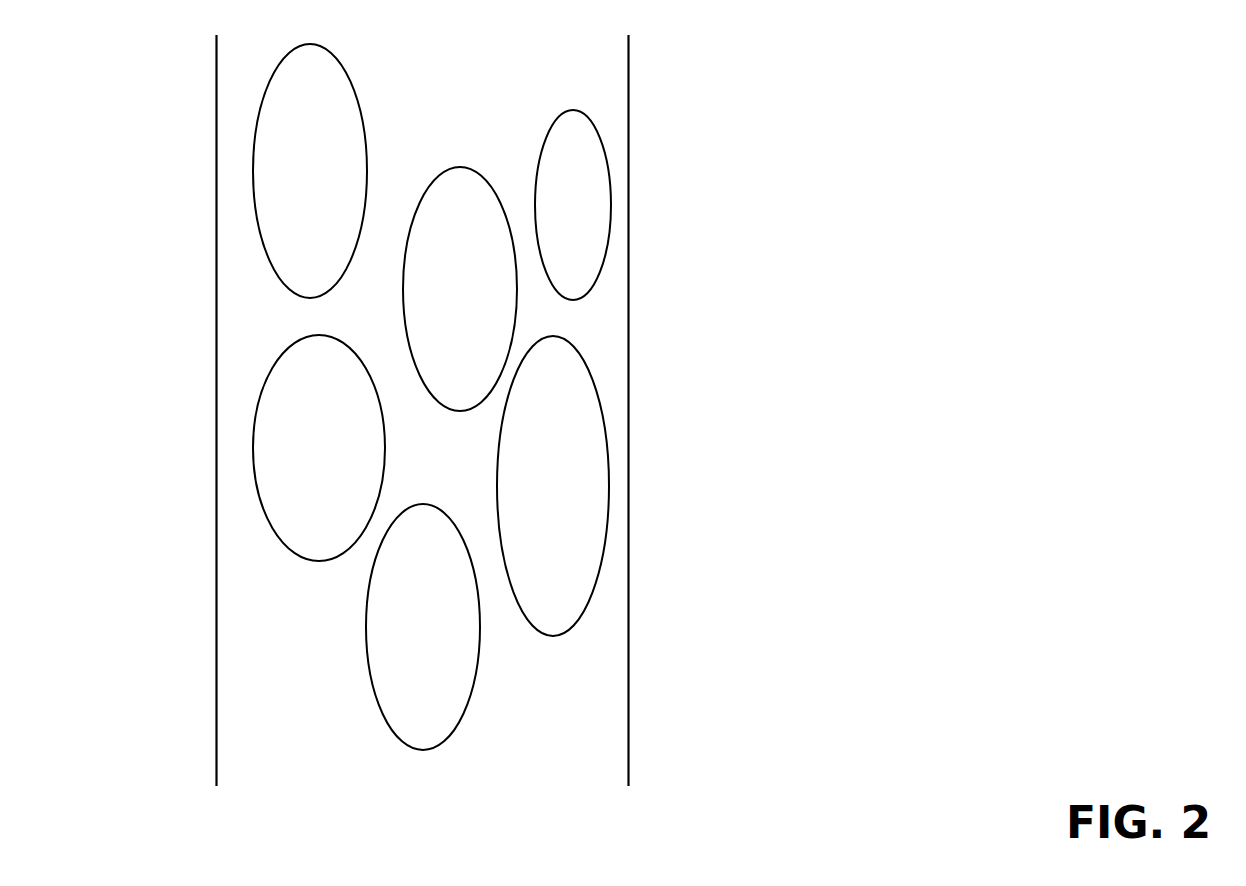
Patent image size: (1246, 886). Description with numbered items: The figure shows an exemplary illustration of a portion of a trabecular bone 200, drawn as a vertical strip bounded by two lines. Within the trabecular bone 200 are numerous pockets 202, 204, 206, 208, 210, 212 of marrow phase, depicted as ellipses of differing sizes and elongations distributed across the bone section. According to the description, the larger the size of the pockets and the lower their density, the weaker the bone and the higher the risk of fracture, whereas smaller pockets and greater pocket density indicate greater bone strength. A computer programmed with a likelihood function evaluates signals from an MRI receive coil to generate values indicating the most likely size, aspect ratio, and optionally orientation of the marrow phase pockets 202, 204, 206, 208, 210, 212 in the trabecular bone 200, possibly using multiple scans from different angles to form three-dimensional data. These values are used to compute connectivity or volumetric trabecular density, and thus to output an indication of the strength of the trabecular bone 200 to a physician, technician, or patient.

The trabecular bone 200 is at (723, 92).
The pocket of marrow phase 202 is at (352, 87).
The pocket of marrow phase 204 is at (562, 115).
The pocket of marrow phase 206 is at (478, 171).
The pocket of marrow phase 208 is at (306, 558).
The pocket of marrow phase 210 is at (552, 636).
The pocket of marrow phase 212 is at (369, 663).